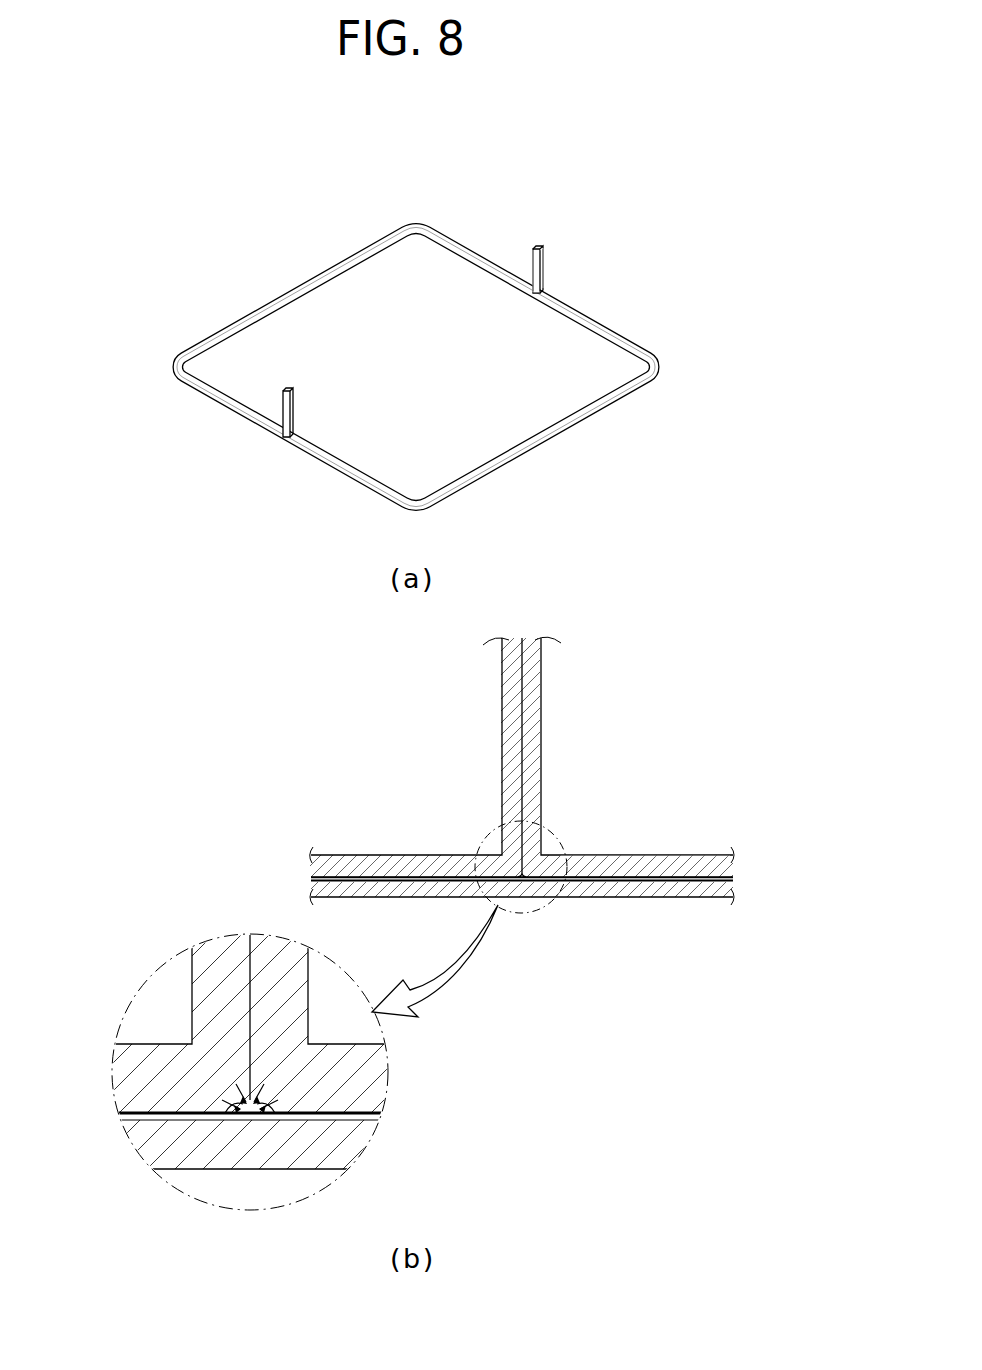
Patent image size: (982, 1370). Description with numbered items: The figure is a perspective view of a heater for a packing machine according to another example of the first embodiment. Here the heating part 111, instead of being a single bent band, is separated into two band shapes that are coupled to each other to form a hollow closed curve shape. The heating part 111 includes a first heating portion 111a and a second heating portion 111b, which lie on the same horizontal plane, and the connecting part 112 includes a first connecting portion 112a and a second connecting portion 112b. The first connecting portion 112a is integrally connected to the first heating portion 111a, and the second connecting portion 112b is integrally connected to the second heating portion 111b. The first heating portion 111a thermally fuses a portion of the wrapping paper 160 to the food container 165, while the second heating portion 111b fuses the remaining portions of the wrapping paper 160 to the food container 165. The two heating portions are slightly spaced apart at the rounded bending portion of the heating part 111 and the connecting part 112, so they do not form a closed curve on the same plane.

The heating part 111 is at (263, 503).
The first heating portion 111a is at (248, 418).
The second heating portion 111b is at (322, 453).
The connecting part 112 is at (582, 206).
The first connecting portion 112a is at (533, 246).
The second connecting portion 112b is at (543, 262).
The wrapping paper 160 is at (440, 877).
The food container 165 is at (680, 895).